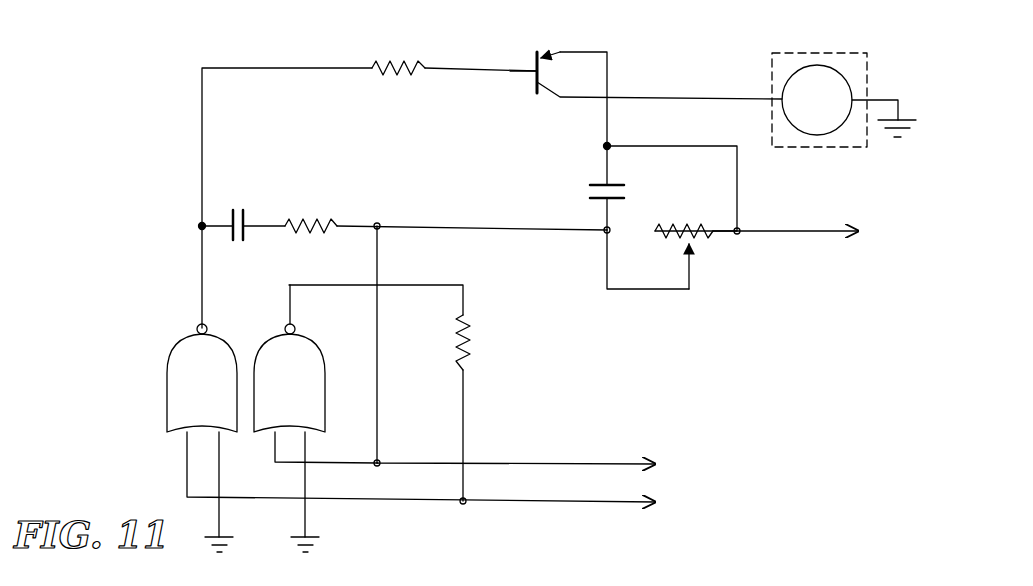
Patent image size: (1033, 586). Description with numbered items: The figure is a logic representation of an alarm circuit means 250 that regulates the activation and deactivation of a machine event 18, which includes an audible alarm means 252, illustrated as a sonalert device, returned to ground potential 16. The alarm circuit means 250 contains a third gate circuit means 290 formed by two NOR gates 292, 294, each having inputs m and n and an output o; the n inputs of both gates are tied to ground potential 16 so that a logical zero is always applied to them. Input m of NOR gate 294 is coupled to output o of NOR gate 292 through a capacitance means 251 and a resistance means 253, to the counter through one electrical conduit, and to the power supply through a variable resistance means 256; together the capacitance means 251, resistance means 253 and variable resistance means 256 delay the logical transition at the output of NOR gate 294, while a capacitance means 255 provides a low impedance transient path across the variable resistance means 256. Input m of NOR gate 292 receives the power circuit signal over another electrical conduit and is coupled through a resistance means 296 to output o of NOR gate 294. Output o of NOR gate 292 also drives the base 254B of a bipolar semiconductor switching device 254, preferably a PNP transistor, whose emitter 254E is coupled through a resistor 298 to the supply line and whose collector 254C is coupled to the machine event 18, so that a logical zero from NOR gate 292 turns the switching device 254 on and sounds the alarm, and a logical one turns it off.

The ground potential 16 is at (890, 119).
The machine event 18 is at (857, 148).
The alarm circuit means 250 is at (199, 60).
The capacitance means 251 is at (245, 214).
The audible alarm means 252 is at (808, 128).
The resistance means 253 is at (318, 223).
The bipolar semiconductor switching device 254 is at (613, 85).
The base 254B is at (521, 73).
The collector 254C is at (549, 84).
The emitter 254E is at (584, 52).
The capacitance means 255 is at (615, 186).
The variable resistance means 256 is at (688, 223).
The third gate circuit means 290 is at (223, 353).
The NOR gate 292 is at (172, 360).
The NOR gate 294 is at (318, 362).
The resistance means 296 is at (470, 346).
The resistor 298 is at (395, 73).